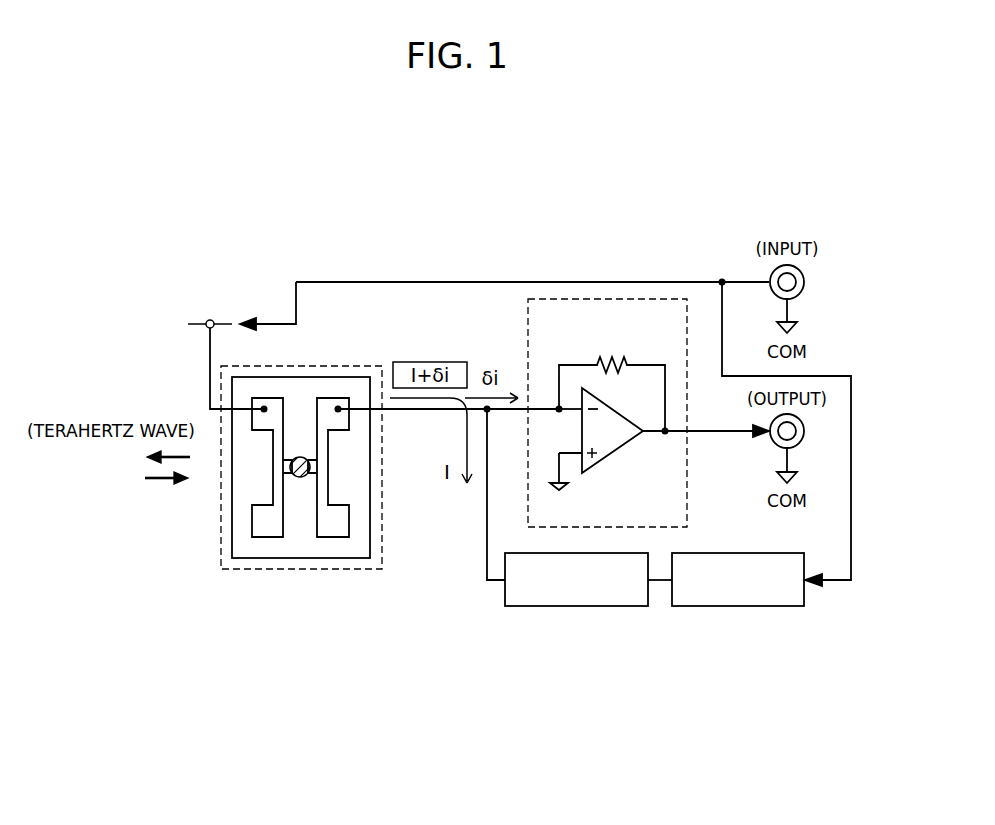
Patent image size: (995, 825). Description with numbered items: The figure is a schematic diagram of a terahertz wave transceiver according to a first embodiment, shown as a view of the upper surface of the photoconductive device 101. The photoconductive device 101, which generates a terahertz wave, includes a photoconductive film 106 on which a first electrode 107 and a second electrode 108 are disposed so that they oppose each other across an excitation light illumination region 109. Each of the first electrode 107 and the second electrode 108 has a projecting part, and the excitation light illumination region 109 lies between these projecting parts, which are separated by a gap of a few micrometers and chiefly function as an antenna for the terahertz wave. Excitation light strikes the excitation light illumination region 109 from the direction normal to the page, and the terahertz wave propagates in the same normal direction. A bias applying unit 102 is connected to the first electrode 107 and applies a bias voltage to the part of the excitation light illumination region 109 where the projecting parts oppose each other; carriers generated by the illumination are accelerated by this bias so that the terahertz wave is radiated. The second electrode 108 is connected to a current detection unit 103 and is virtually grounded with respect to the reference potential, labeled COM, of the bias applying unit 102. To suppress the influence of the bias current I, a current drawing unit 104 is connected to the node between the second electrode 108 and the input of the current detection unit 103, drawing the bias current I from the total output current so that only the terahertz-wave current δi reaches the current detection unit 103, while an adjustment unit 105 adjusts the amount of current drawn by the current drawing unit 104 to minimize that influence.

The photoconductive device 101 is at (252, 476).
The bias applying unit 102 is at (202, 321).
The current detection unit 103 is at (610, 298).
The current drawing unit 104 is at (582, 606).
The adjustment unit 105 is at (740, 606).
The photoconductive film 106 is at (240, 487).
The first electrode 107 is at (273, 530).
The second electrode 108 is at (330, 530).
The excitation light illumination region 109 is at (303, 460).